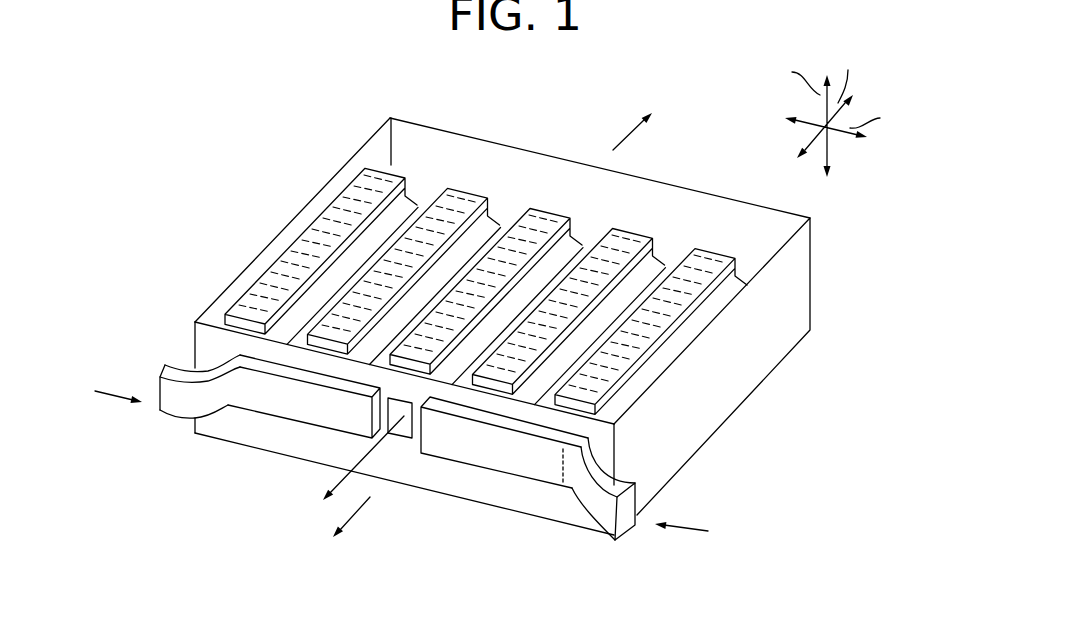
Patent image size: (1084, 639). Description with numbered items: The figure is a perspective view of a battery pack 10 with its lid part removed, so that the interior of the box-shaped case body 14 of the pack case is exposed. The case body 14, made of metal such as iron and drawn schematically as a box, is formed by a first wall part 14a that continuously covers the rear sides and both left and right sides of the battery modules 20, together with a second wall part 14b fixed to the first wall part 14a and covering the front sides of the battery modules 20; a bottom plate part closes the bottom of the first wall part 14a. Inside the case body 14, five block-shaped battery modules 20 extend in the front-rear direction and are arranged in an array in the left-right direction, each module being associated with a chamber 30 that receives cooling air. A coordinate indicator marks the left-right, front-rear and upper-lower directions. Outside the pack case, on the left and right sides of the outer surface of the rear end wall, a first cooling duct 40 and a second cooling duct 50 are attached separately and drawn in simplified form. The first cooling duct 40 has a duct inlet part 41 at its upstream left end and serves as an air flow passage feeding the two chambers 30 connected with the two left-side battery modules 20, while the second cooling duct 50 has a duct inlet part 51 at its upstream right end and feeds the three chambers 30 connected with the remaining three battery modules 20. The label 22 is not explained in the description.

The battery pack 10 is at (352, 128).
The case body 14 is at (753, 362).
The first wall part 14a is at (717, 398).
The second wall part 14b is at (525, 148).
The battery module 20 is at (316, 227).
The coating layer on electrode member 22 is at (347, 183).
The chamber 30 is at (414, 202).
The first cooling duct 40 is at (270, 400).
The duct inlet part 41 is at (158, 400).
The second cooling duct 50 is at (495, 455).
The duct inlet part 51 is at (597, 512).